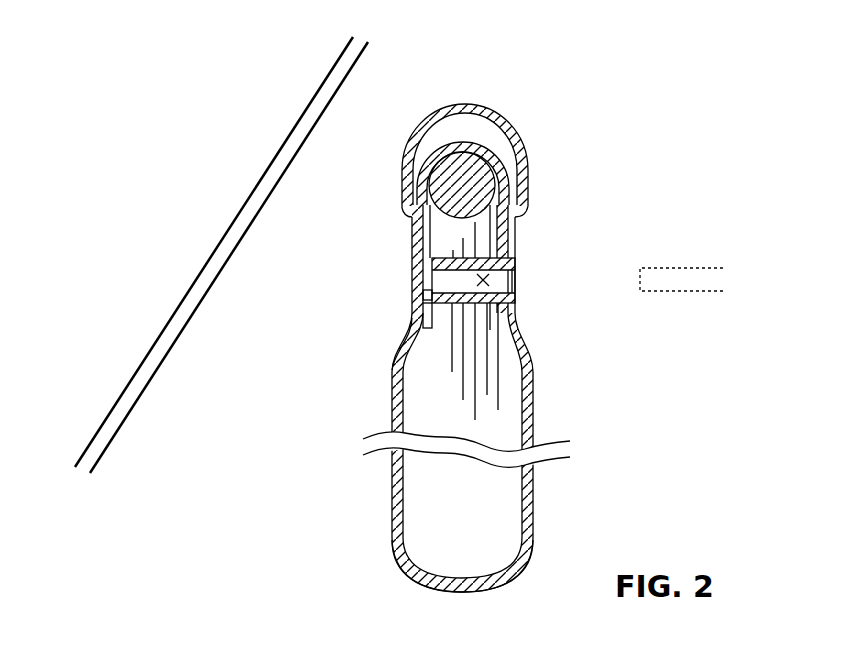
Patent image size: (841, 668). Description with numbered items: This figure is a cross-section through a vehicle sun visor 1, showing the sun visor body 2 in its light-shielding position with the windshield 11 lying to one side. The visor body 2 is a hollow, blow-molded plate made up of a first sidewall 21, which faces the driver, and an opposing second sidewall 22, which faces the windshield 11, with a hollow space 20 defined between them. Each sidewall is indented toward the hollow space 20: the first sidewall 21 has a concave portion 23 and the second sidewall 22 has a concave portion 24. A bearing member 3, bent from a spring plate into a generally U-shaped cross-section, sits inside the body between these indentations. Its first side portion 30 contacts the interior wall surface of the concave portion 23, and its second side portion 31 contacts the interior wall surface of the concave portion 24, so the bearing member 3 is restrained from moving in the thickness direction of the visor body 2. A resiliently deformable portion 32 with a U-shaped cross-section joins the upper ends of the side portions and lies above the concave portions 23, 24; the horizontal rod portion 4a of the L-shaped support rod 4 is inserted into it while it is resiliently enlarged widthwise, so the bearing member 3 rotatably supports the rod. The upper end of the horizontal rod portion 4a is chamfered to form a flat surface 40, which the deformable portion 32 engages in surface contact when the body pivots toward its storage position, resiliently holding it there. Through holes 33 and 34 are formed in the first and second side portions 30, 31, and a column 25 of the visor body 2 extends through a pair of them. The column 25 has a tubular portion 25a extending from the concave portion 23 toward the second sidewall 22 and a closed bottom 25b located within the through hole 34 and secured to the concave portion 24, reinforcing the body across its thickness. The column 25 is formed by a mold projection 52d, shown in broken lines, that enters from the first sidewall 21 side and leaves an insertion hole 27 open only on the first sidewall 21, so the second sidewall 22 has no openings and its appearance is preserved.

The sun visor 1 is at (513, 70).
The sun visor body 2 is at (464, 398).
The bearing member 3 is at (489, 144).
The support rod 4 is at (532, 185).
The horizontal rod portion 4a is at (483, 177).
The windshield 11 is at (157, 352).
The hollow space 20 is at (488, 537).
The first sidewall 21 is at (533, 412).
The second sidewall 22 is at (390, 388).
The concave portion 23 is at (512, 246).
The concave portion 24 is at (413, 247).
The column 25 is at (469, 319).
The tubular portion 25a is at (515, 292).
The closed bottom 25b is at (412, 290).
The insertion hole 27 is at (490, 281).
The first side portion 30 is at (510, 210).
The second side portion 31 is at (410, 217).
The resiliently deformable portion 32 is at (476, 138).
The through hole 33 is at (508, 257).
The through hole 34 is at (425, 262).
The flat surface 40 is at (478, 156).
The projection 52d is at (702, 292).